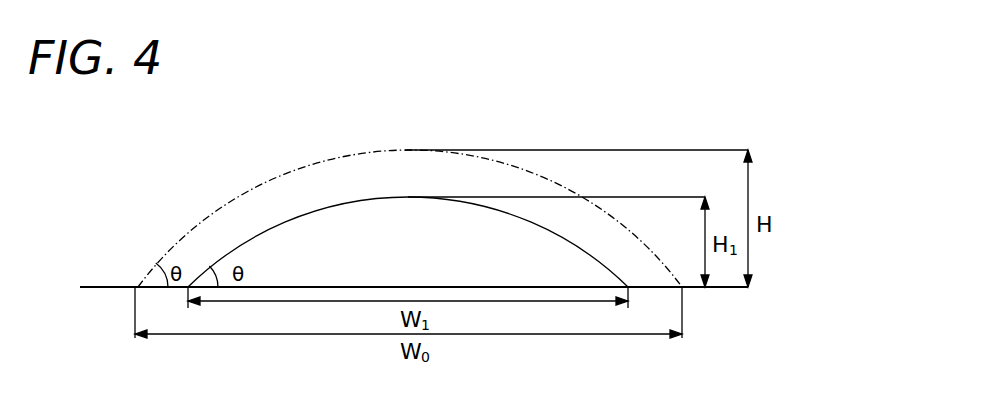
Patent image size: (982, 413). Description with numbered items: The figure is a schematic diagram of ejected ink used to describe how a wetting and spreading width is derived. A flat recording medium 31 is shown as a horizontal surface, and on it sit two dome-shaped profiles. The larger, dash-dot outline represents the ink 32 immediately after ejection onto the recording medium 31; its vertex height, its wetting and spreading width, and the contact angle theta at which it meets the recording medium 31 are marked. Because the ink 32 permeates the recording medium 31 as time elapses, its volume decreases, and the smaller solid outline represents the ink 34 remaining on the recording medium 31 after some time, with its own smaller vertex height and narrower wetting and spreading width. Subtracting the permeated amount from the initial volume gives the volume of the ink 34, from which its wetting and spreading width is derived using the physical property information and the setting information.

The recording medium 31 is at (101, 287).
The ink 32 is at (247, 192).
The ink 34 is at (338, 205).